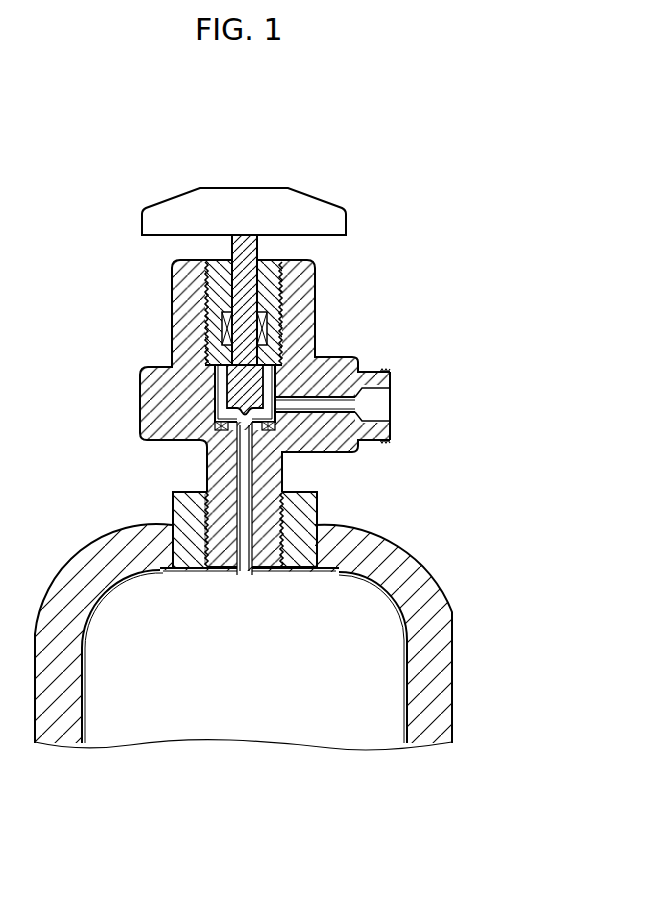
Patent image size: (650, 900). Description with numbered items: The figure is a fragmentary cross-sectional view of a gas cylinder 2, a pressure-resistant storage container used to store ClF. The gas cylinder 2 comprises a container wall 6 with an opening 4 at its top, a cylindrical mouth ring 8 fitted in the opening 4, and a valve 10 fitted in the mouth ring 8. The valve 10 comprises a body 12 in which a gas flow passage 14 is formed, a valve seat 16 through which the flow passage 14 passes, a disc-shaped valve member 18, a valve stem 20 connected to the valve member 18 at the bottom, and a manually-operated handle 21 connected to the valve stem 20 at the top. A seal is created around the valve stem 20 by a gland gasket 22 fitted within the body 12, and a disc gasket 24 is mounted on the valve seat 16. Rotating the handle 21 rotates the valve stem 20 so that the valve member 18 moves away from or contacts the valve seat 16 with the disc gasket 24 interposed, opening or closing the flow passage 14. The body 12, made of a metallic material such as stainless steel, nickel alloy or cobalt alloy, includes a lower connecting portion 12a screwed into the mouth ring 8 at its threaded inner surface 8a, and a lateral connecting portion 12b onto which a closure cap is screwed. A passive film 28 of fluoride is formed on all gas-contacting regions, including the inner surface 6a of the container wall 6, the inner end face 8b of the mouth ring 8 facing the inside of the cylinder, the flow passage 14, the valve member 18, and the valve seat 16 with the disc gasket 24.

The gas cylinder 2 is at (250, 390).
The opening 4 is at (329, 558).
The container wall 6 is at (420, 582).
The inner surface of container wall 6a is at (410, 686).
The mouth ring 8 is at (157, 508).
The threaded inner surface 8a is at (216, 517).
The inner end face of mouth ring 8b is at (297, 571).
The valve 10 is at (232, 189).
The body 12 is at (319, 284).
The lower connecting portion 12a is at (216, 548).
The lateral connecting portion 12b is at (376, 385).
The gas flow passage 14 is at (243, 470).
The valve seat 16 is at (212, 430).
The valve member 18 is at (232, 378).
The valve stem 20 is at (245, 291).
The handle 21 is at (305, 207).
The gland gasket 22 is at (226, 330).
The disc gasket 24 is at (287, 428).
The passive film 28 is at (198, 573).